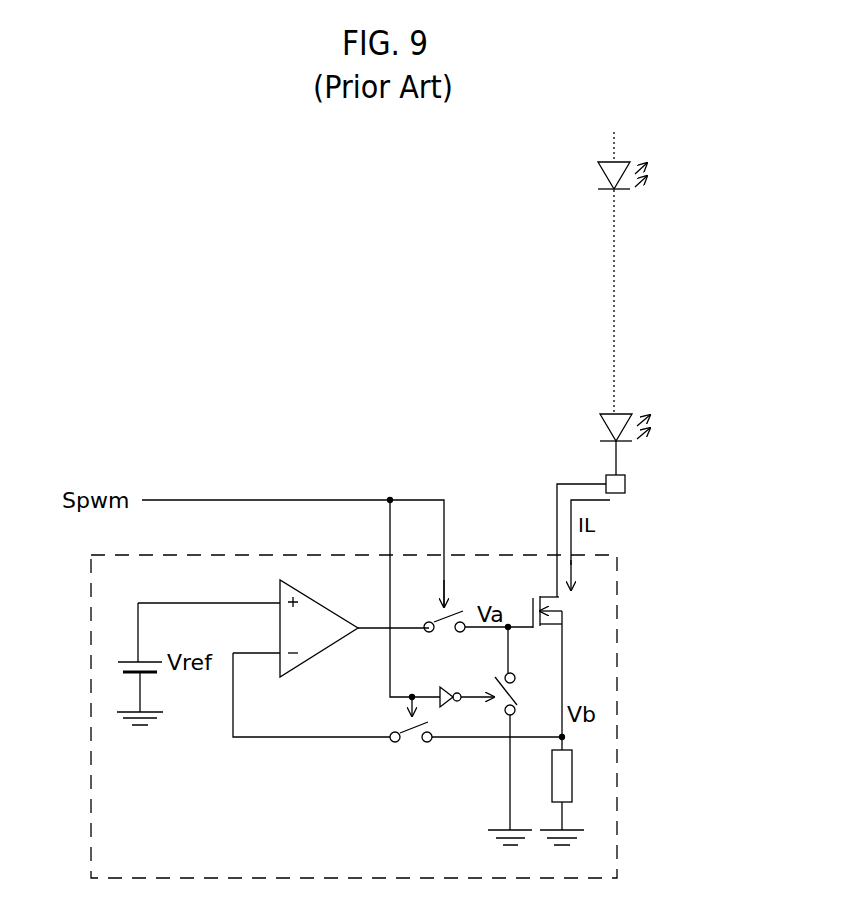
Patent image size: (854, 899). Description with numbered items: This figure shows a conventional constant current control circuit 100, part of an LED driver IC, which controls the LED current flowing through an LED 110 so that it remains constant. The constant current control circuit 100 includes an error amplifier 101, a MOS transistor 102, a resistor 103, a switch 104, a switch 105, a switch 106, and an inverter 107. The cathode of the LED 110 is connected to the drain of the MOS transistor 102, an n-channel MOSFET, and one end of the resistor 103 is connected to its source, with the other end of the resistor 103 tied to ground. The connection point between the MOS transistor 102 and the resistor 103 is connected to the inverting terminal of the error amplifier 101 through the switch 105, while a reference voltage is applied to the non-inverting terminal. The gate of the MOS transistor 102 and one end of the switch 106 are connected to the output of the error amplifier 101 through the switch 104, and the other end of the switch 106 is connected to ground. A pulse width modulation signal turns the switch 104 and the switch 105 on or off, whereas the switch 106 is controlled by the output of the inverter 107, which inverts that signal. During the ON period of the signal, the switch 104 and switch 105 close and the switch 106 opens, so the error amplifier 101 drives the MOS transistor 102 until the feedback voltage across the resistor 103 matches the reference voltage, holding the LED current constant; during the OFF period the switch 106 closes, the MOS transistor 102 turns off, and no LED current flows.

The constant current control circuit 100 is at (622, 552).
The error amplifier 101 is at (320, 600).
The MOS transistor 102 is at (566, 612).
The resistor 103 is at (572, 786).
The switch 104 is at (456, 600).
The switch 105 is at (405, 750).
The switch 106 is at (523, 698).
The inverter 107 is at (448, 688).
The LED 110 is at (628, 250).